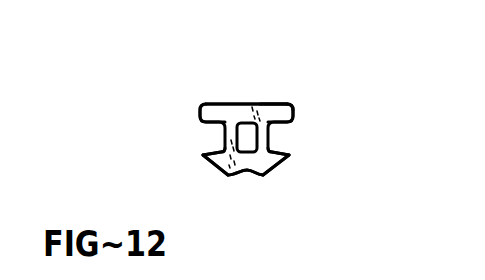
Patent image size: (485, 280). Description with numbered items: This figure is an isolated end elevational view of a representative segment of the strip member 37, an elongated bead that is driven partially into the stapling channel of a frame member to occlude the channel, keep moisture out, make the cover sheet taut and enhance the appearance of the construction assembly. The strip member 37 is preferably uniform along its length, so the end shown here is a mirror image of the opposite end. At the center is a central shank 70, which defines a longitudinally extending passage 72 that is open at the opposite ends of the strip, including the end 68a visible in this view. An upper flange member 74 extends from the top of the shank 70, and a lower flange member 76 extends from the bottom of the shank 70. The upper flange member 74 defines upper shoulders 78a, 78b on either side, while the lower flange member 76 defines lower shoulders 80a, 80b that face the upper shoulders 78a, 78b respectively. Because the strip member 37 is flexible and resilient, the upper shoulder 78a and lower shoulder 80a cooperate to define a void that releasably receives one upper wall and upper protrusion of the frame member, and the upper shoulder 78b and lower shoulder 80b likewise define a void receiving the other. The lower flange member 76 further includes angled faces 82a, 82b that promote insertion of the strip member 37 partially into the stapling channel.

The central shank 70 is at (225, 135).
The longitudinally extending passage 72 is at (248, 133).
The upper flange member 74 is at (227, 104).
The end of strip member 68a is at (282, 107).
The upper shoulder 78a is at (210, 122).
The upper shoulder 78b is at (295, 123).
The lower shoulder 80a is at (217, 154).
The lower shoulder 80b is at (288, 153).
The angled face 82a is at (217, 167).
The angled face 82b is at (278, 170).
The lower flange member 76 is at (247, 172).
The strip member 37 is at (361, 135).